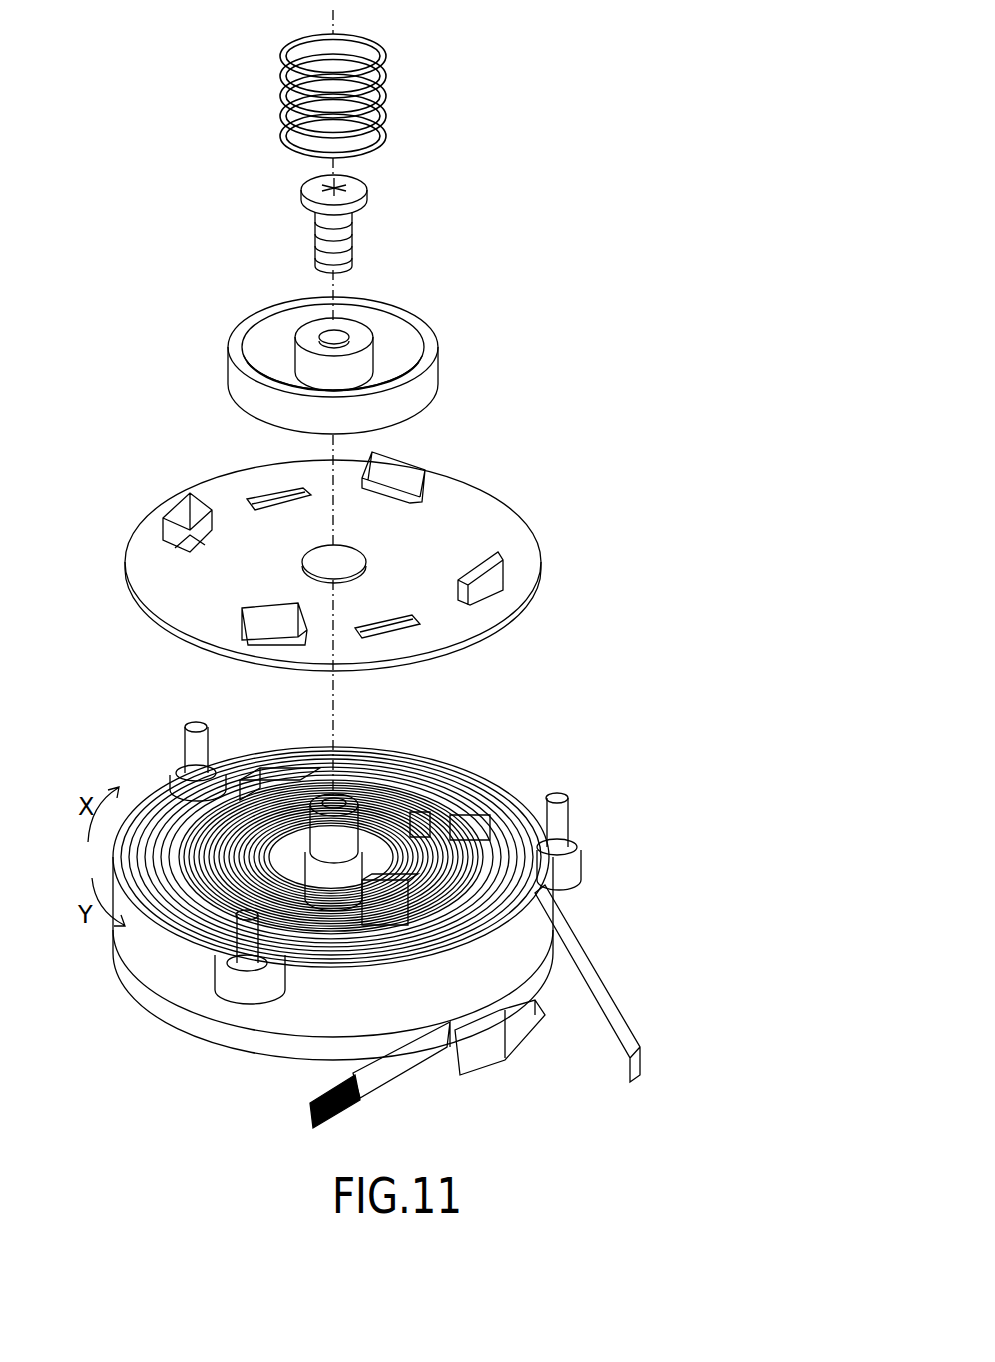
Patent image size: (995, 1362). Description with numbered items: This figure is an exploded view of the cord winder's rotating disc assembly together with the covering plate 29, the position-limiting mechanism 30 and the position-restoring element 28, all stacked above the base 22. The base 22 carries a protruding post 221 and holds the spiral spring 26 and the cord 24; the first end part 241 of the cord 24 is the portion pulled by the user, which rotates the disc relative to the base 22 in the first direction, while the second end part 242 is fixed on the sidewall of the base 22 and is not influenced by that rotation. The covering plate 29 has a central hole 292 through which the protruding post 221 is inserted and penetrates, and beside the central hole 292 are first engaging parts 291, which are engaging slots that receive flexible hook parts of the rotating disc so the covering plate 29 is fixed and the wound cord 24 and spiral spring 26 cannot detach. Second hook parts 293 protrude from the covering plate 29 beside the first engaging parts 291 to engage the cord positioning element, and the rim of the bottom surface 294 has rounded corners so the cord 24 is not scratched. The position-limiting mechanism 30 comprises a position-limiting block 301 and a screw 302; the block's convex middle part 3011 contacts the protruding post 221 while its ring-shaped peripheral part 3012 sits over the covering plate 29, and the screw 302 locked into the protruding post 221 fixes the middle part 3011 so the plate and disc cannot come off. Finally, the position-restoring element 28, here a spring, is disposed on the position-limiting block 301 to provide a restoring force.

The position-restoring element 28 is at (378, 62).
The position-limiting mechanism 30 is at (557, 126).
The screw 302 is at (352, 190).
The position-limiting block 301 is at (419, 279).
The middle part 3011 is at (353, 332).
The peripheral part 3012 is at (398, 355).
The covering plate 29 is at (334, 564).
The first engaging part 291 is at (273, 494).
The central hole 292 is at (340, 565).
The second hook part 293 is at (187, 508).
The bottom surface 294 is at (178, 638).
The base 22 is at (415, 921).
The protruding post 221 is at (300, 790).
The spiral spring 26 is at (440, 812).
The cord 24 is at (470, 975).
The first end part 241 is at (632, 1035).
The second end part 242 is at (372, 1088).